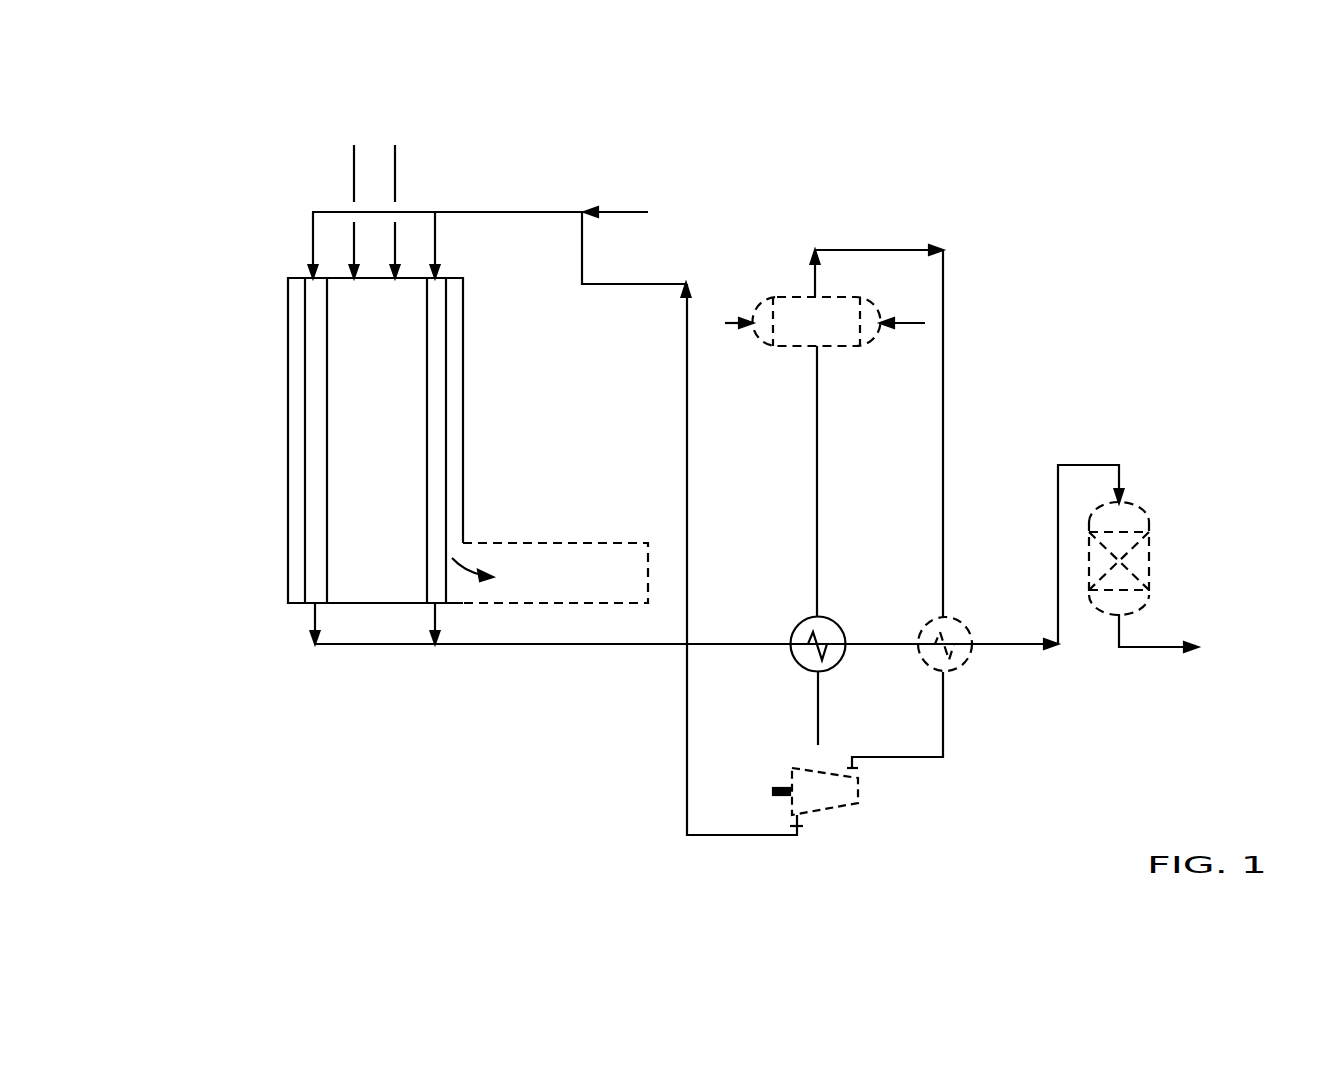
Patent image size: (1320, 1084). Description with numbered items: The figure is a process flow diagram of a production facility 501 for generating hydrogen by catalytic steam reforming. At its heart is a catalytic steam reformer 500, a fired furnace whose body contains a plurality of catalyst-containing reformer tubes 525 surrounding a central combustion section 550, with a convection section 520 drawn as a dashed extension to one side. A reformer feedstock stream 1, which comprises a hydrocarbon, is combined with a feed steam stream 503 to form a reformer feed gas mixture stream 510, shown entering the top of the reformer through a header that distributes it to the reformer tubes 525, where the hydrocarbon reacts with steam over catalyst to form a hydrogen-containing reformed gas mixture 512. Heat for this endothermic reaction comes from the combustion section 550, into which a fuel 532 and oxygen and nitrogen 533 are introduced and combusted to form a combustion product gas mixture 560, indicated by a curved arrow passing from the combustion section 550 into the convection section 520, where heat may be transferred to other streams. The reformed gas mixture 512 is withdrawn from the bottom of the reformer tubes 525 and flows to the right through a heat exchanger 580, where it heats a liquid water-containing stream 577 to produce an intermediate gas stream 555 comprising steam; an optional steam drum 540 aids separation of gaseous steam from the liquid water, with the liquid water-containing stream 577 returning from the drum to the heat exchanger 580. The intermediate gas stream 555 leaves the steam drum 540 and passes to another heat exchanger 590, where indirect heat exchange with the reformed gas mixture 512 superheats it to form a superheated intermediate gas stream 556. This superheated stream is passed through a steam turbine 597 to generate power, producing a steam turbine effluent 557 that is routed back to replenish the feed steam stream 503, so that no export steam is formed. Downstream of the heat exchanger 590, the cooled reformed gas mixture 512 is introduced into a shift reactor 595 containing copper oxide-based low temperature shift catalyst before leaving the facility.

The reformer feedstock stream 1 is at (620, 212).
The production facility 501 is at (1068, 192).
The catalytic steam reformer 500 is at (297, 343).
The feed steam stream 503 is at (582, 250).
The reformer feed gas mixture stream 510 is at (494, 212).
The reformed gas mixture 512 is at (482, 645).
The convection section 520 is at (583, 588).
The catalyst-containing reformer tubes 525 is at (305, 425).
The fuel 532 is at (354, 178).
The oxygen and nitrogen 533 is at (395, 181).
The steam drum 540 is at (782, 297).
The combustion section 550 is at (393, 426).
The intermediate gas stream 555 is at (865, 250).
The superheated intermediate gas stream 556 is at (945, 715).
The steam turbine effluent 557 is at (752, 835).
The combustion product gas mixture 560 is at (468, 570).
The liquid water-containing stream 577 is at (818, 498).
The heat exchanger 580 is at (830, 617).
The heat exchanger 590 is at (967, 622).
The shift reactor 595 is at (1143, 515).
The steam turbine 597 is at (815, 810).